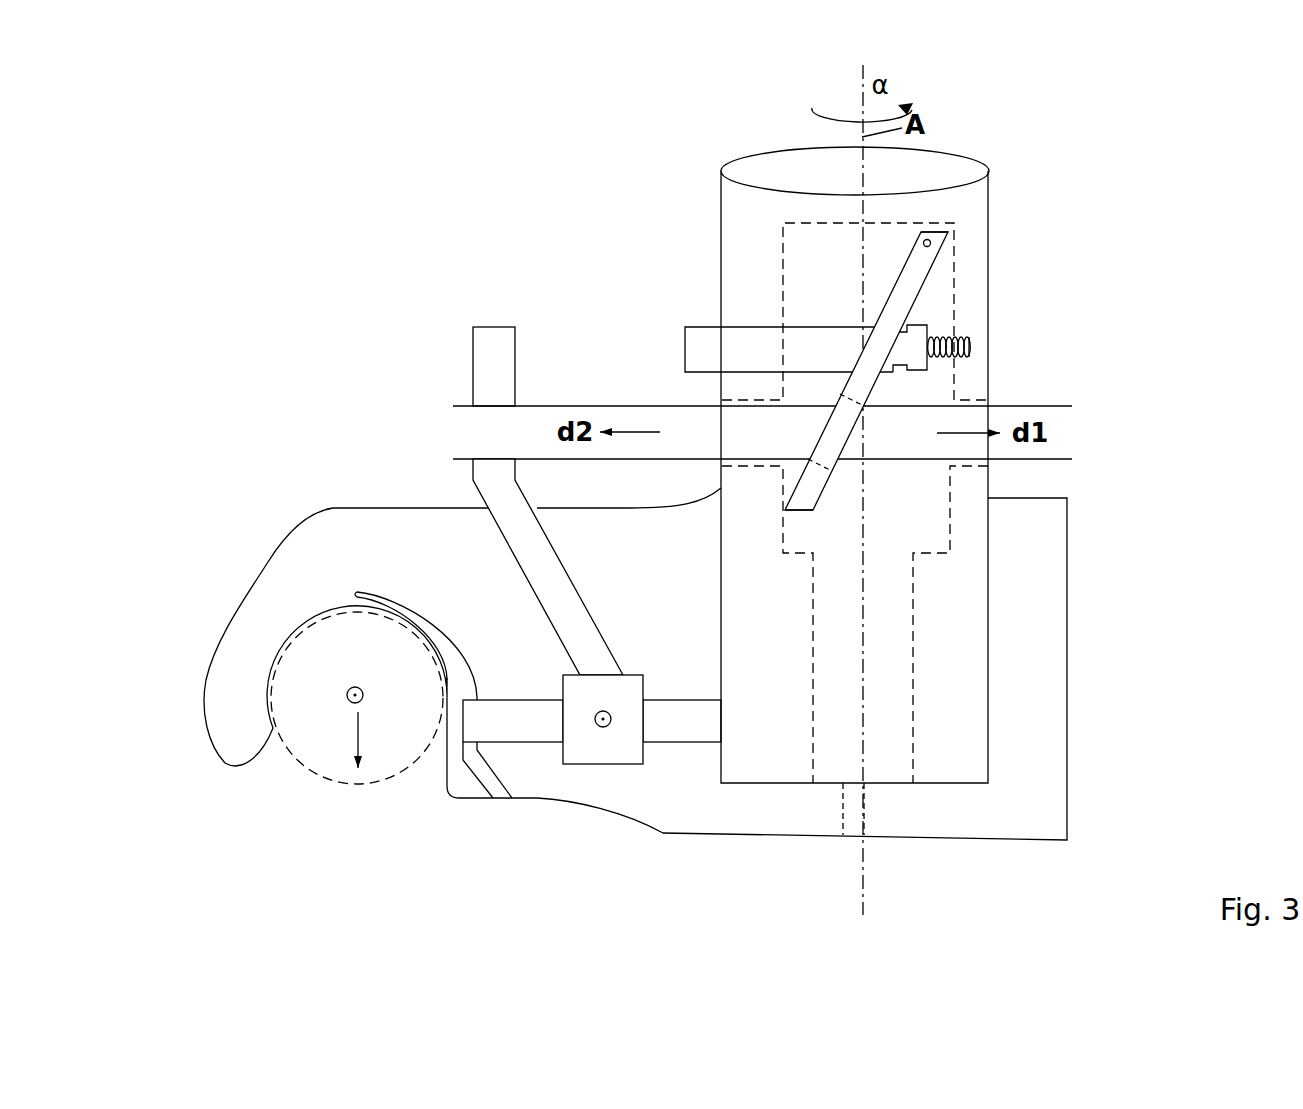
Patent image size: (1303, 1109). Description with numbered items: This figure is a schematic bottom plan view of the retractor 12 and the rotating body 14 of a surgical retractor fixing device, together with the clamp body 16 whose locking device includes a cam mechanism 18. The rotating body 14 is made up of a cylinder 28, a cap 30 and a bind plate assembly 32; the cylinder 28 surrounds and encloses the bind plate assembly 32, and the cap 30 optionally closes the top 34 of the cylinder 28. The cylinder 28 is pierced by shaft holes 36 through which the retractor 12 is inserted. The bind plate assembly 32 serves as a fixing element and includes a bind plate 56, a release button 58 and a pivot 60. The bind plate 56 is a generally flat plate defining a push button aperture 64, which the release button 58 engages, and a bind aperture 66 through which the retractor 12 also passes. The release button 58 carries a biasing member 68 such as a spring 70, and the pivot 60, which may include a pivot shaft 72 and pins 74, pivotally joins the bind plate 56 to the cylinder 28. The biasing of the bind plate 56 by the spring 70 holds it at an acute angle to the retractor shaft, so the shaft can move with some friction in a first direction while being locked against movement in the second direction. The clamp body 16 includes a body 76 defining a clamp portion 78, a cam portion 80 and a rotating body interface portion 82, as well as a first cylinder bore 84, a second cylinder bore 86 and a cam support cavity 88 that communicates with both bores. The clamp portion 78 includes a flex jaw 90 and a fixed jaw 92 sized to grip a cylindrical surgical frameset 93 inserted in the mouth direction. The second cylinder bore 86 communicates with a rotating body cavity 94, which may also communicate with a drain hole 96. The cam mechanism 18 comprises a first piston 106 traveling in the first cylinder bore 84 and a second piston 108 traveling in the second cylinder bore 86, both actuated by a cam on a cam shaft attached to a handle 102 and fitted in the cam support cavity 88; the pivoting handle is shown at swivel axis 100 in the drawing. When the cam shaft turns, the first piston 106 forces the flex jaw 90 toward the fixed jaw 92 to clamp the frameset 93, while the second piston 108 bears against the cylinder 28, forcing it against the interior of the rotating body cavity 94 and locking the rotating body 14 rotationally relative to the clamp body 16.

The retractor 12 is at (1072, 459).
The rotating body 14 is at (625, 200).
The clamp body 16 is at (333, 532).
The cam mechanism 18 is at (452, 494).
The cylinder 28 is at (993, 208).
The cap 30 is at (916, 160).
The bind plate assembly 32 is at (888, 280).
The top 34 is at (717, 143).
The shaft holes 36 is at (717, 405).
The bind plate 56 is at (880, 382).
The release button 58 is at (685, 355).
The pivot 60 is at (947, 236).
The push button aperture 64 is at (717, 350).
The bind aperture 66 is at (826, 478).
The biasing member 68 is at (967, 340).
The spring 70 is at (988, 355).
The pivot shaft 72 is at (908, 283).
The pins 74 is at (931, 245).
The body 76 is at (292, 530).
The clamp portion 78 is at (268, 748).
The cam portion 80 is at (617, 806).
The rotating body interface portion 82 is at (1068, 596).
The first cylinder bore 84 is at (453, 790).
The second cylinder bore 86 is at (668, 742).
The cam support cavity 88 is at (600, 757).
The flex jaw 90 is at (443, 787).
The fixed jaw 92 is at (232, 722).
The cylindrical surgical frameset 93 is at (333, 762).
The rotating body cavity 94 is at (989, 707).
The drain hole 96 is at (855, 832).
The sensor 100 is at (633, 665).
The handle 102 is at (485, 357).
The first piston 106 is at (512, 725).
The second piston 108 is at (685, 732).